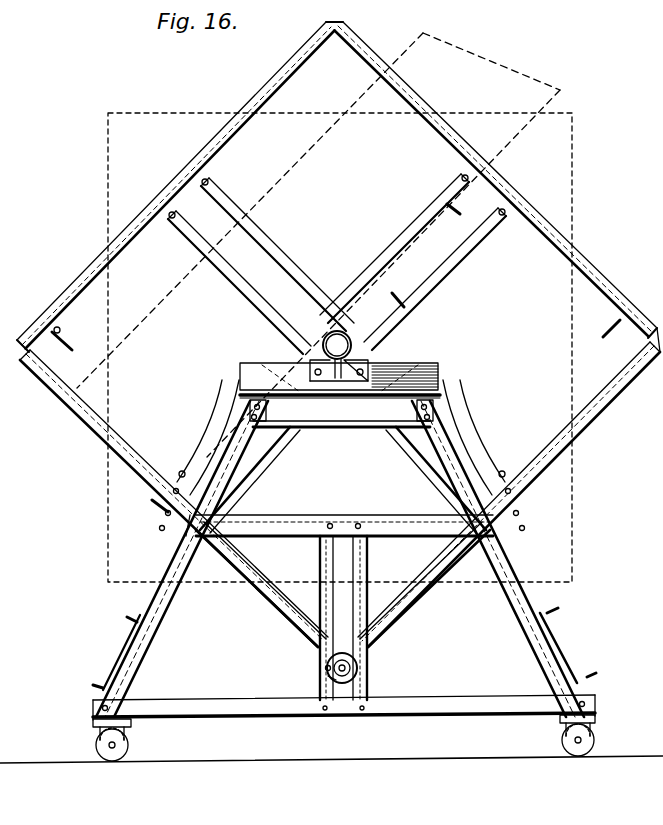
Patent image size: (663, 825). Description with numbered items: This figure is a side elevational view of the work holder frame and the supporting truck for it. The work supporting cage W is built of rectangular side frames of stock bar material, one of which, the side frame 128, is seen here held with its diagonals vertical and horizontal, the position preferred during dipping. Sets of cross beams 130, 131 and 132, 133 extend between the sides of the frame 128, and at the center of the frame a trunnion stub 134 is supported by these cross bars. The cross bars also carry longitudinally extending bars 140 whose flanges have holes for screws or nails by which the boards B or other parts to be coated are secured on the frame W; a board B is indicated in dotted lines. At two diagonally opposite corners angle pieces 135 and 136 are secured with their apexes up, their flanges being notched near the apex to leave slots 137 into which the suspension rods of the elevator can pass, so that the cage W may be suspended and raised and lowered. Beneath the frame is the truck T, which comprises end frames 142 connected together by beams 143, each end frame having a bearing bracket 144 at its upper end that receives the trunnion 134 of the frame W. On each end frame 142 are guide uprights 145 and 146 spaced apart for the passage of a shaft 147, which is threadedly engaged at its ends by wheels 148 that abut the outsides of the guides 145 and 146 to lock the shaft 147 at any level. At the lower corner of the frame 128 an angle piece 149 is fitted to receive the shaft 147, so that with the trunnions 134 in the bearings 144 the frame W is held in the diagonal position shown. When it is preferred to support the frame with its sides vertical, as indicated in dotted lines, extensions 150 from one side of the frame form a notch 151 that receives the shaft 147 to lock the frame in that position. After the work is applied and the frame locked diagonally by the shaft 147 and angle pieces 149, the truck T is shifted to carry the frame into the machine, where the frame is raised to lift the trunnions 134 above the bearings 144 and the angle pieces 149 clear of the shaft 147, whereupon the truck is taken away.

The rectangular side frame 128 is at (603, 410).
The cross beam 130 is at (417, 224).
The cross beam 131 is at (430, 291).
The cross beam 132 is at (283, 257).
The cross beam 133 is at (243, 292).
The trunnion stub 134 is at (334, 304).
The angle piece 135 is at (72, 343).
The angle piece 136 is at (610, 328).
The slot 137 is at (57, 330).
The longitudinally extending bar 140 is at (398, 300).
The end frame 142 is at (448, 698).
The beam 143 is at (574, 656).
The bearing bracket 144 is at (375, 355).
The guide upright 145 is at (320, 615).
The guide upright 146 is at (357, 592).
The shaft 147 is at (330, 674).
The wheel 148 is at (358, 668).
The angle piece 149 is at (326, 667).
The extension 150 is at (156, 512).
The notch 151 is at (182, 520).
The work supporting cage W is at (360, 347).
The board B is at (506, 78).
The truck T is at (338, 548).